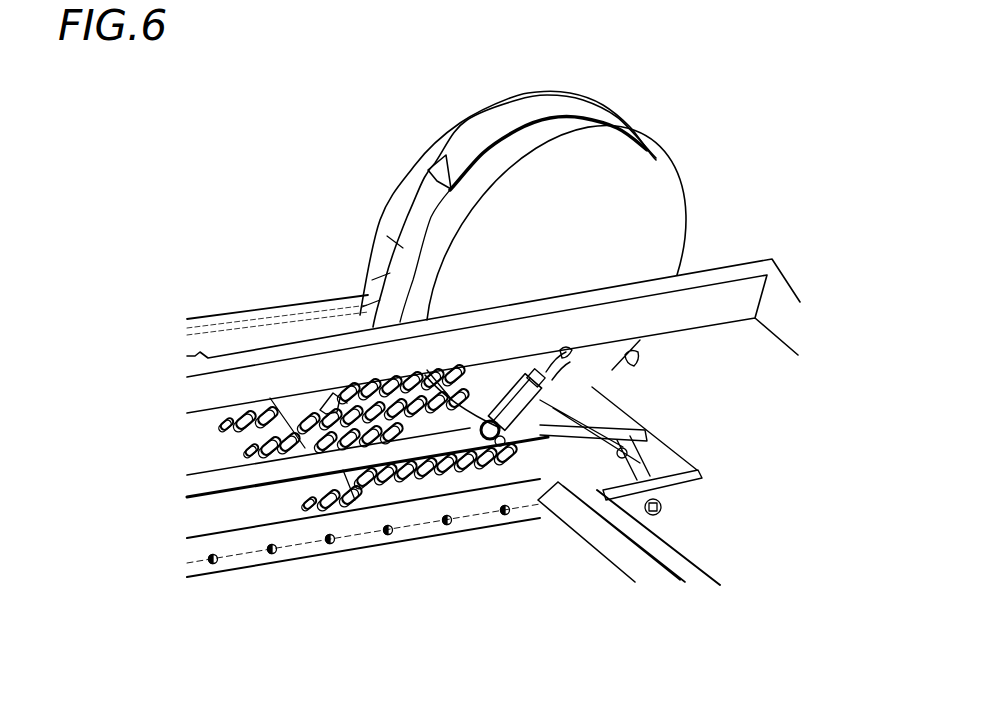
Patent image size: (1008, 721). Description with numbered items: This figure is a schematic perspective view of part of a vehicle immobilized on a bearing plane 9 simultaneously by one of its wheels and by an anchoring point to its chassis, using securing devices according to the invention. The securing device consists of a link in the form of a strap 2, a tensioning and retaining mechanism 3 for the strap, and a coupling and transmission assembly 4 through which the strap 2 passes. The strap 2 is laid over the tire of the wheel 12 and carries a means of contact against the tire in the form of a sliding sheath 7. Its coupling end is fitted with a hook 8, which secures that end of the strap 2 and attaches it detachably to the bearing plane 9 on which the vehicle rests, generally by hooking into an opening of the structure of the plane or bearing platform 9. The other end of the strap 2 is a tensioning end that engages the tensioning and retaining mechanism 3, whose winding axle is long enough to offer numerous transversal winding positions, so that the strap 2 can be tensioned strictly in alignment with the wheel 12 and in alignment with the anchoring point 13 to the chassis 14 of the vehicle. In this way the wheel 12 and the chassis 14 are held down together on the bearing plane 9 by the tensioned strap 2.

The strap 2 is at (378, 252).
The tensioning and retaining mechanism 3 is at (676, 517).
The coupling and transmission assembly 4 is at (552, 386).
The sliding sheath 7 is at (458, 152).
The hook 8 is at (320, 410).
The bearing plane 9 is at (436, 482).
The wheel 12 is at (607, 218).
The anchoring point 13 is at (470, 428).
The chassis 14 is at (723, 293).